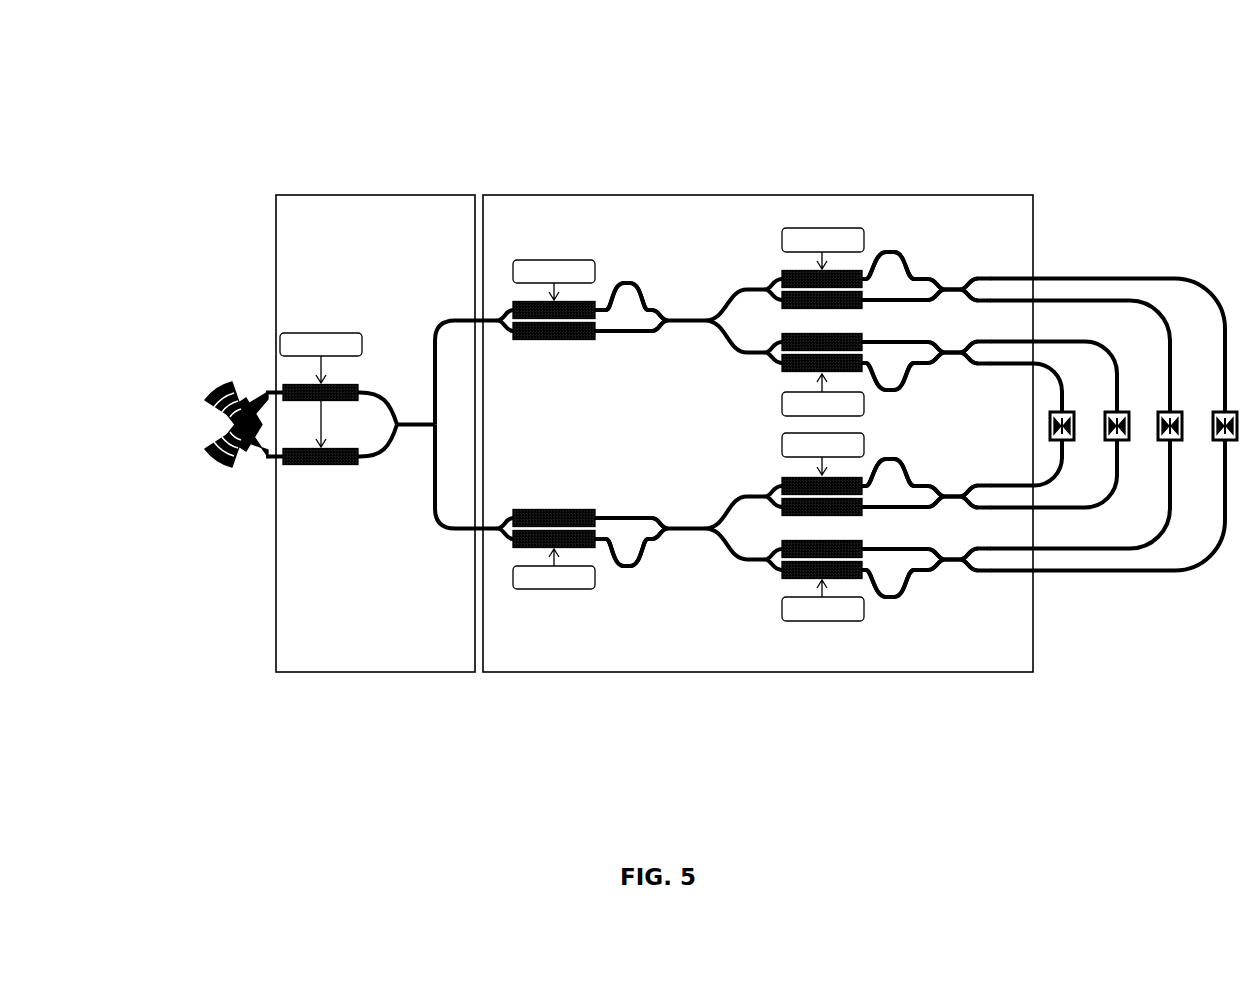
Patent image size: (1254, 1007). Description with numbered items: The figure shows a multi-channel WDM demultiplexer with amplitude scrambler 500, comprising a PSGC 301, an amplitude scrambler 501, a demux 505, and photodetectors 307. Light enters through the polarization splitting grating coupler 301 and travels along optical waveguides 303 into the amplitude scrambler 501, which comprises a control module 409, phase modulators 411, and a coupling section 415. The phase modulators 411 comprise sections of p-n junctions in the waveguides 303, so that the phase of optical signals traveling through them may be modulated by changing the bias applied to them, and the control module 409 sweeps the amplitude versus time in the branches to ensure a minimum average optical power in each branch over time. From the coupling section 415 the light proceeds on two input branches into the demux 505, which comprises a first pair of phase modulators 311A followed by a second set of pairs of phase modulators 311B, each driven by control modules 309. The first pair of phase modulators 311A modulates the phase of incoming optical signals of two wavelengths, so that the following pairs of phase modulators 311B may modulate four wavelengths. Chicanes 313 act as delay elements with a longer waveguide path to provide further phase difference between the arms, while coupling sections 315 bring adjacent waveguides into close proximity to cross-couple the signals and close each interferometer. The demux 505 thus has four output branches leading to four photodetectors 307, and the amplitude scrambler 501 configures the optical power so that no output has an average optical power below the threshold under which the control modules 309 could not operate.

The multi-channel WDM demultiplexer with amplitude scrambler 500 is at (186, 78).
The polarization splitting grating coupler 301 is at (257, 400).
The optical waveguides 303 is at (488, 520).
The photodetectors 307 is at (1112, 442).
The control modules 309 is at (558, 260).
The first pair of phase modulators 311A is at (597, 300).
The second set of phase modulators 311B is at (782, 272).
The chicanes 313 is at (650, 290).
The coupling sections 315 is at (668, 326).
The control module 409 is at (322, 333).
The phase modulators 411 is at (352, 384).
The coupling section 415 is at (418, 430).
The amplitude scrambler 501 is at (375, 433).
The demux 505 is at (758, 433).